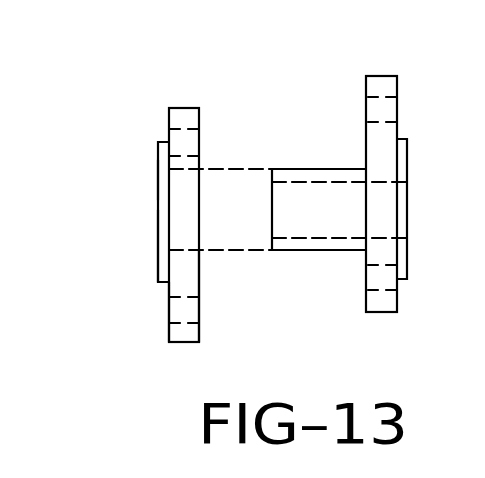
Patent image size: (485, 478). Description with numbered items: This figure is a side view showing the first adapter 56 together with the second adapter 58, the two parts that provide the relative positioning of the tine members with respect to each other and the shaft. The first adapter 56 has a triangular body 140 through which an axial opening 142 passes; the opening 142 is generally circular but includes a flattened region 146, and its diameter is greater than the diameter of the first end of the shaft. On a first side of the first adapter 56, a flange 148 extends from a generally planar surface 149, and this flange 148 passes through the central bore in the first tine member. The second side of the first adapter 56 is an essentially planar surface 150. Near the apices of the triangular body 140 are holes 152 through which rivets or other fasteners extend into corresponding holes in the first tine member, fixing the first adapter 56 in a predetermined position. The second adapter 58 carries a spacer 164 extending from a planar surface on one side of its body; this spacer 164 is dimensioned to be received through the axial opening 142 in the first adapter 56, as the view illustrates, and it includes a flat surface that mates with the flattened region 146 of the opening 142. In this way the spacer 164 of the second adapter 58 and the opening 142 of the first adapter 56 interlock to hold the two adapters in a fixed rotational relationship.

The first adapter 56 is at (177, 113).
The second adapter 58 is at (377, 85).
The triangular body 140 is at (190, 272).
The axial opening 142 is at (160, 243).
The flattened region 146 is at (162, 174).
The flange 148 is at (163, 147).
The generally planar surface 149 is at (168, 291).
The essentially planar surface 150 is at (202, 303).
The holes 152 is at (188, 131).
The spacer 164 is at (322, 175).